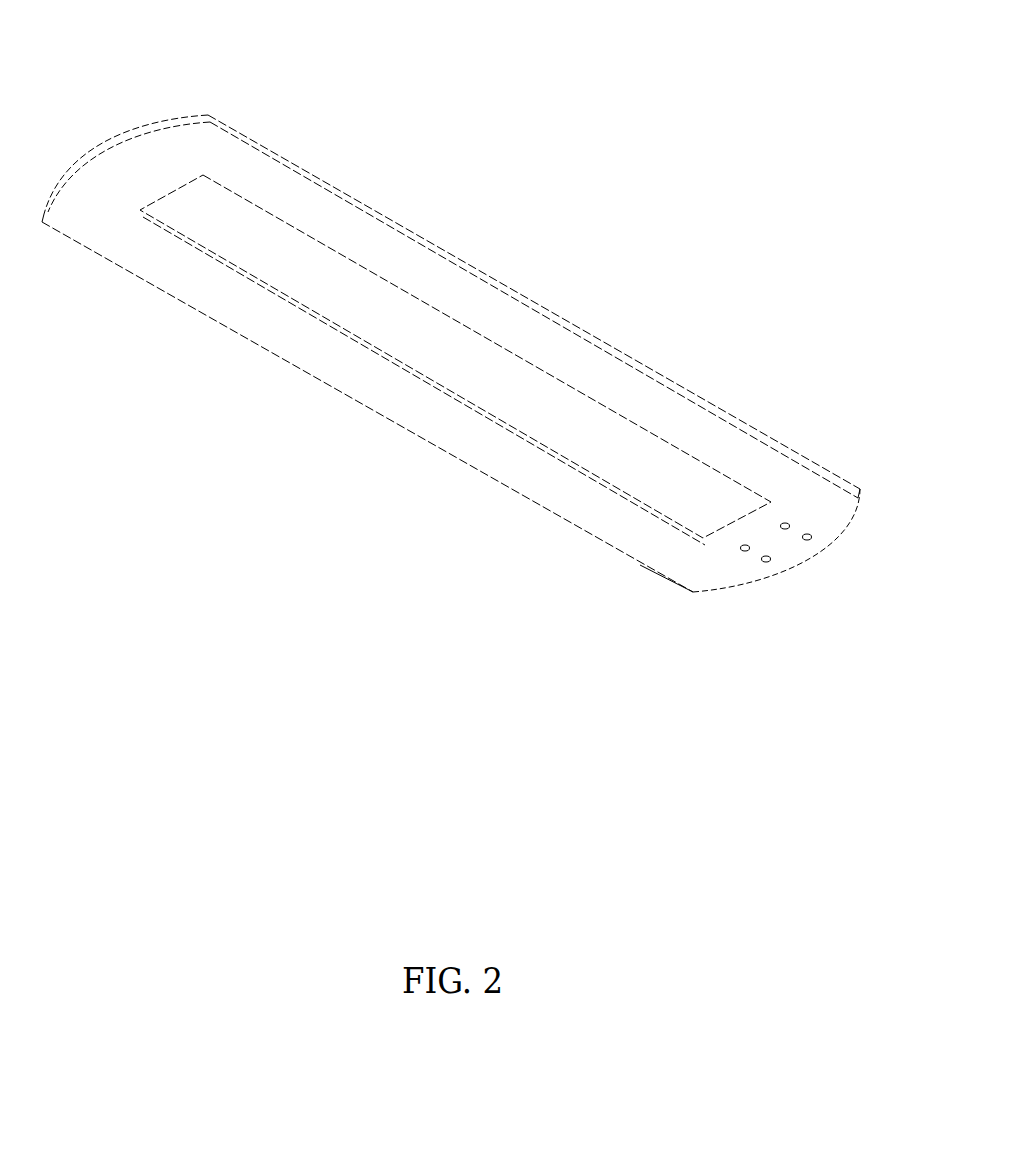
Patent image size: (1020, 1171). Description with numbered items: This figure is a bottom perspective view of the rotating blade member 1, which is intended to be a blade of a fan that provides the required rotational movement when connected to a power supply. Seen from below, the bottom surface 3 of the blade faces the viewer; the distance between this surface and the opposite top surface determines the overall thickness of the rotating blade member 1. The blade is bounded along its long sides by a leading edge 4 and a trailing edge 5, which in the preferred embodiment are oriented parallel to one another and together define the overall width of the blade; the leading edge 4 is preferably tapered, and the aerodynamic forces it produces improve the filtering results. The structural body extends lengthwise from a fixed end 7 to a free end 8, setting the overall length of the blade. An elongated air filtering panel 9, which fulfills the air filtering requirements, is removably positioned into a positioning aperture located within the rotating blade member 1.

The rotating blade member 1 is at (460, 337).
The bottom surface 3 is at (660, 568).
The leading edge 4 is at (367, 408).
The trailing edge 5 is at (622, 352).
The fixed end 7 is at (817, 560).
The free end 8 is at (103, 143).
The air filtering panel 9 is at (519, 401).